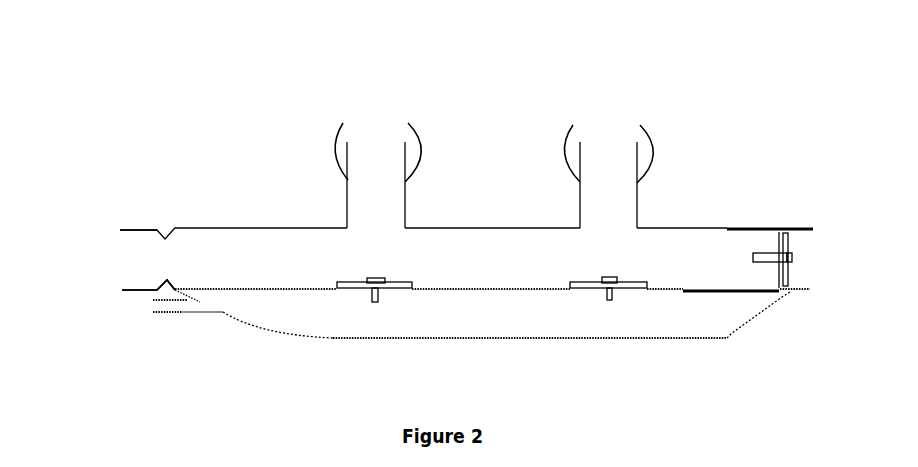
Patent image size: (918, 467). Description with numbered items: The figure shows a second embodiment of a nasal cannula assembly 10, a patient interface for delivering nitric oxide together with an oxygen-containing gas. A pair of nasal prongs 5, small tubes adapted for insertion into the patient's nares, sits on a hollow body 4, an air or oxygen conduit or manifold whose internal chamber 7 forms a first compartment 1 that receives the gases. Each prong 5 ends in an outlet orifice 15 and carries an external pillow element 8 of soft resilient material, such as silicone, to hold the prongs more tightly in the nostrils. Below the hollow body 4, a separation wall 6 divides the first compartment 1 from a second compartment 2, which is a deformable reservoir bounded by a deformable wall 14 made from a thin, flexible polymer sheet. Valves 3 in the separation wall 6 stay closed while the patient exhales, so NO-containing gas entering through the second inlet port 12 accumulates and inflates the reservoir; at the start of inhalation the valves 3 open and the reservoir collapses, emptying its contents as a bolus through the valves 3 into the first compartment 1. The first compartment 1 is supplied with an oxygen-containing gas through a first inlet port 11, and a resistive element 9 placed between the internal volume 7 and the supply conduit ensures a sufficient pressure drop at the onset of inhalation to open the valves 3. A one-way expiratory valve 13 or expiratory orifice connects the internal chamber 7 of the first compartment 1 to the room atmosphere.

The first compartment 1 is at (462, 266).
The second compartment 2 is at (483, 321).
The valve 3 is at (360, 300).
The hollow body 4 is at (245, 230).
The nasal prong 5 is at (372, 200).
The separation wall 6 is at (262, 297).
The internal chamber 7 is at (658, 247).
The pillow element 8 is at (422, 153).
The resistive element 9 is at (165, 277).
The nasal cannula assembly 10 is at (295, 95).
The first inlet port 11 is at (120, 282).
The second inlet port 12 is at (167, 315).
The one-way expiratory valve 13 is at (783, 267).
The deformable wall 14 is at (387, 345).
The outlet orifice 15 is at (388, 138).